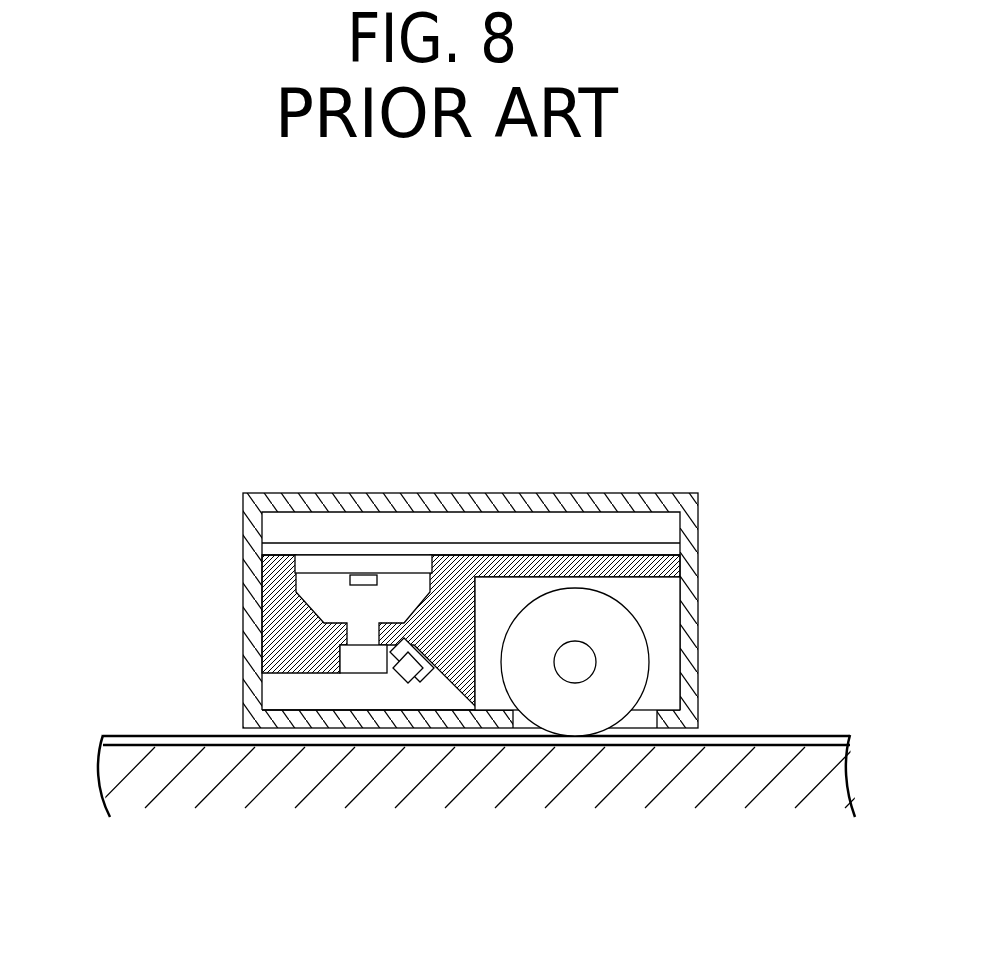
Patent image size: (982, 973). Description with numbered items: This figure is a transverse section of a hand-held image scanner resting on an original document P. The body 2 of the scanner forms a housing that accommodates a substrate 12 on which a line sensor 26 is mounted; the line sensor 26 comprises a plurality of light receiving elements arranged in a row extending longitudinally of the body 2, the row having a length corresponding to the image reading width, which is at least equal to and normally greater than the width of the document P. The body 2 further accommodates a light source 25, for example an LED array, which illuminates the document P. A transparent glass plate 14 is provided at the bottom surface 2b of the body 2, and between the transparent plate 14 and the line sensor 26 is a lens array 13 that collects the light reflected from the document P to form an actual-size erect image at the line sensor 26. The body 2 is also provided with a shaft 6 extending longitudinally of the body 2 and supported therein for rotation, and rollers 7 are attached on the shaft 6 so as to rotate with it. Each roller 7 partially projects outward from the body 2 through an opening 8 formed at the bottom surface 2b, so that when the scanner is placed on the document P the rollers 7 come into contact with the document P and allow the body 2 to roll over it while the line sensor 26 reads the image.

The body 2 is at (698, 560).
The bottom surface 2b is at (456, 712).
The shaft 6 is at (580, 667).
The rollers 7 is at (558, 722).
The opening 8 is at (502, 718).
The substrate 12 is at (583, 540).
The lens array 13 is at (357, 662).
The transparent glass plate 14 is at (348, 712).
The light source 25 is at (423, 678).
The line sensor 26 is at (328, 563).
The original document P is at (143, 737).